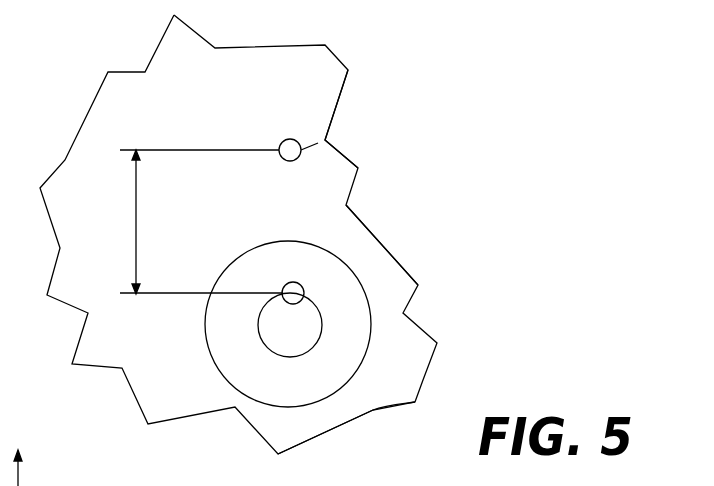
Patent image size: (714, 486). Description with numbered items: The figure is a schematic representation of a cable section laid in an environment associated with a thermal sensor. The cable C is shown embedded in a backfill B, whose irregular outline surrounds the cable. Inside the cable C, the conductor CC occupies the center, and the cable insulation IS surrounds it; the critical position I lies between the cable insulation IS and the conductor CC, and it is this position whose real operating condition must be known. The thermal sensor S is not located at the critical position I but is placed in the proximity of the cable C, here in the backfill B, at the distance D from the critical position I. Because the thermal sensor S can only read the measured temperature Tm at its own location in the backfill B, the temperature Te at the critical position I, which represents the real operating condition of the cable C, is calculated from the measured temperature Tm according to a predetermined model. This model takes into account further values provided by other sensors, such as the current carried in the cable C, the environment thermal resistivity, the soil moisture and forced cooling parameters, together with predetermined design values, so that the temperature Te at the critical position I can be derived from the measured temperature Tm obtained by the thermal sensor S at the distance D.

The backfill B is at (413, 352).
The measured temperature Tm is at (325, 138).
The temperature Te is at (305, 287).
The thermal sensor S is at (285, 140).
The critical position I is at (290, 287).
The distance D is at (135, 222).
The cable C is at (369, 297).
The conductor CC is at (310, 328).
The cable insulation IS is at (327, 383).